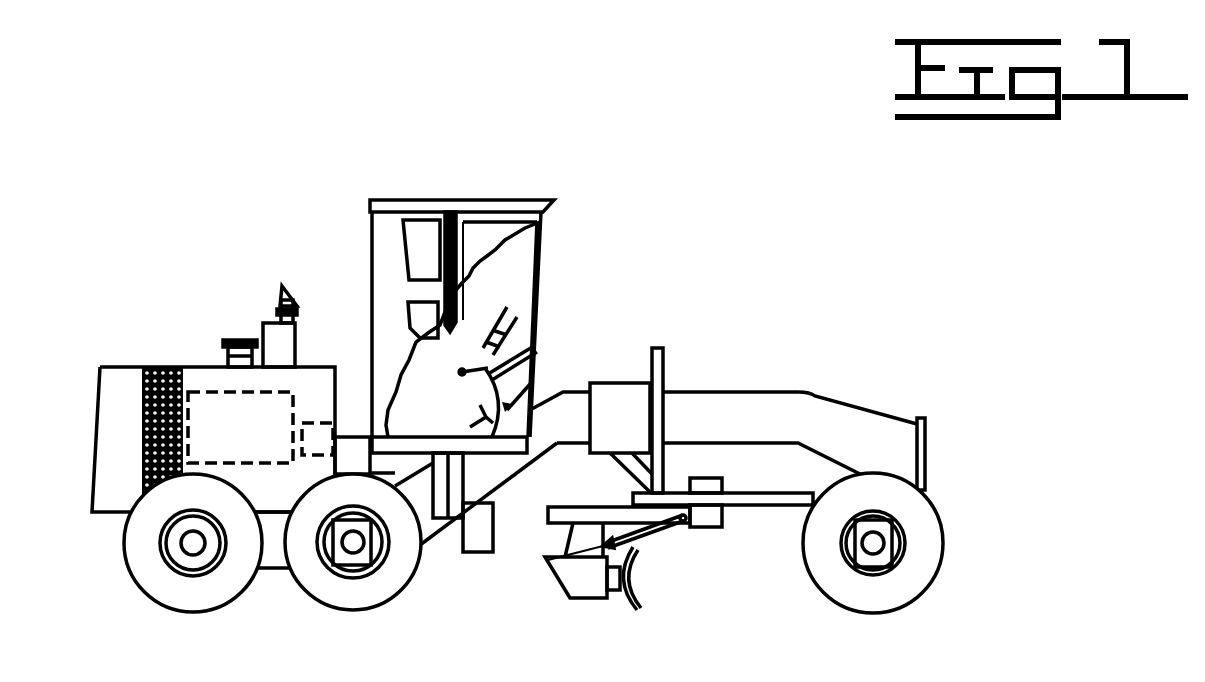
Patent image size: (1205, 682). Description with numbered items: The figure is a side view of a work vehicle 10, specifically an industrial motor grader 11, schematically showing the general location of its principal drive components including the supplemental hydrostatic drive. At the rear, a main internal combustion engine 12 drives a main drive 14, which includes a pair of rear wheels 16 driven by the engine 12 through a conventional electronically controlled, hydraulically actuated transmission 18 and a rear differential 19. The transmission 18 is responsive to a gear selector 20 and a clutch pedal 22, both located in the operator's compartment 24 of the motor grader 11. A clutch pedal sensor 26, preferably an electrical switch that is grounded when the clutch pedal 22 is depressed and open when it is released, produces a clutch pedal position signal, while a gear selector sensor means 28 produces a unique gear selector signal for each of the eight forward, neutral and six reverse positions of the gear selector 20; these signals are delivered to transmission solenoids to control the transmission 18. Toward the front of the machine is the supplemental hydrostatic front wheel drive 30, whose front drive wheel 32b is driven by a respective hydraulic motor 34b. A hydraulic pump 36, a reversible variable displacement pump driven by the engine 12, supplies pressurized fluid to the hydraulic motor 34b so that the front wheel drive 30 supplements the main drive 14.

The work vehicle 10 is at (742, 296).
The industrial motor grader 11 is at (757, 392).
The main internal combustion engine 12 is at (227, 391).
The main drive 14 is at (269, 571).
The rear wheels 16 is at (269, 566).
The transmission 18 is at (270, 572).
The rear differential 19 is at (352, 572).
The gear selector 20 is at (523, 331).
The clutch pedal 22 is at (531, 354).
The operator's compartment 24 is at (488, 199).
The clutch pedal sensor 26 is at (531, 384).
The gear selector sensor means 28 is at (520, 310).
The supplemental hydrostatic front wheel drive 30 is at (918, 539).
The right front drive wheel 32b is at (904, 566).
The hydraulic motor 34b is at (878, 570).
The hydraulic pump 36 is at (318, 423).